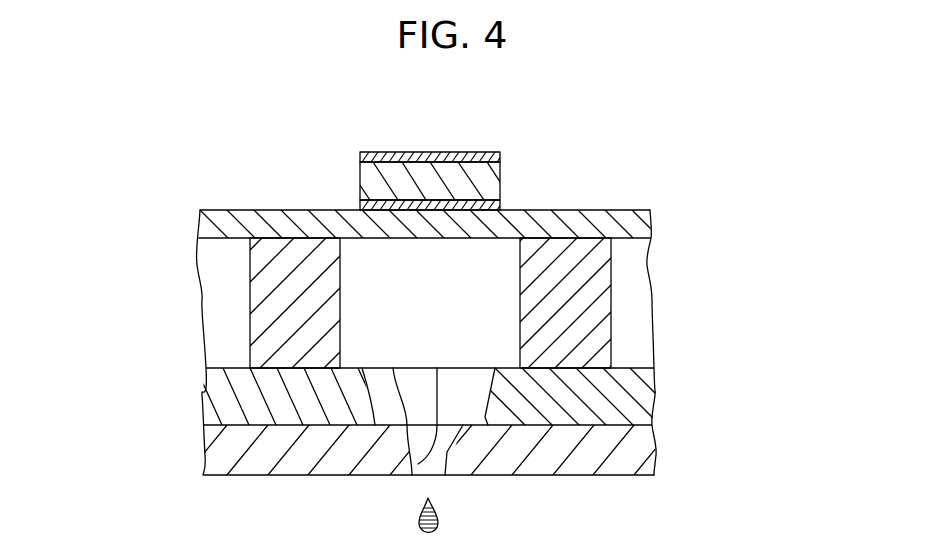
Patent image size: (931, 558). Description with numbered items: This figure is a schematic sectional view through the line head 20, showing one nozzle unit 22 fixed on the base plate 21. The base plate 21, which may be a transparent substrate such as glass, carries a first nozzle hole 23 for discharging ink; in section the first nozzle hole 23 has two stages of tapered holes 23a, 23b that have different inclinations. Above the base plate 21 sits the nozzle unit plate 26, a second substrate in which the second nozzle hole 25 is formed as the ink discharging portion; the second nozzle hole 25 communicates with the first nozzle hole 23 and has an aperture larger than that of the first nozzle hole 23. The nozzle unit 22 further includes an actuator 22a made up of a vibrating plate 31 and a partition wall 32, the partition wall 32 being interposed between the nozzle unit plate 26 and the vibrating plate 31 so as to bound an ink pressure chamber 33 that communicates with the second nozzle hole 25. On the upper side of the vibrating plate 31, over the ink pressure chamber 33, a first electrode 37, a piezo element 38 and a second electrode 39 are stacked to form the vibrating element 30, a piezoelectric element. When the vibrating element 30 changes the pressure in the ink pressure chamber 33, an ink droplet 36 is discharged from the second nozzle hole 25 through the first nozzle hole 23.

The line head 20 is at (604, 150).
The base plate 21 is at (634, 455).
The nozzle unit 22 is at (725, 150).
The actuator 22a is at (147, 150).
The first nozzle hole 23 is at (372, 321).
The tapered hole 23a is at (437, 368).
The tapered hole 23b is at (393, 368).
The second nozzle hole 25 is at (368, 393).
The nozzle unit plate 26 is at (634, 396).
The vibrating element 30 is at (424, 142).
The vibrating plate 31 is at (640, 221).
The partition wall 32 is at (262, 297).
The ink pressure chamber 33 is at (483, 300).
The ink droplet 36 is at (441, 515).
The first electrode 37 is at (360, 205).
The piezo element 38 is at (362, 180).
The second electrode 39 is at (360, 156).